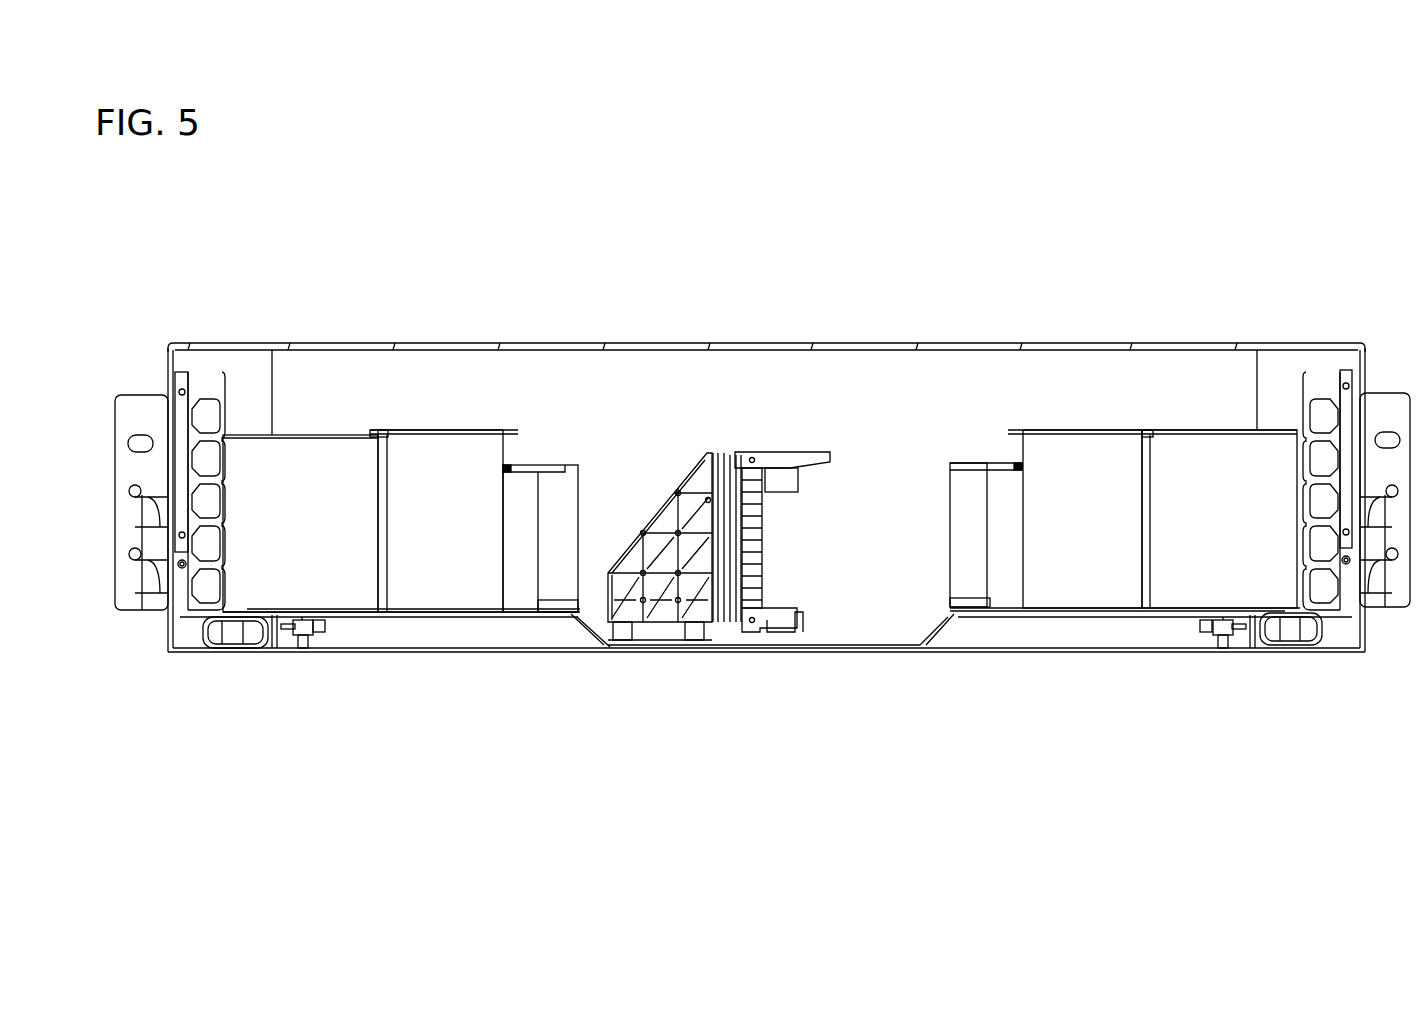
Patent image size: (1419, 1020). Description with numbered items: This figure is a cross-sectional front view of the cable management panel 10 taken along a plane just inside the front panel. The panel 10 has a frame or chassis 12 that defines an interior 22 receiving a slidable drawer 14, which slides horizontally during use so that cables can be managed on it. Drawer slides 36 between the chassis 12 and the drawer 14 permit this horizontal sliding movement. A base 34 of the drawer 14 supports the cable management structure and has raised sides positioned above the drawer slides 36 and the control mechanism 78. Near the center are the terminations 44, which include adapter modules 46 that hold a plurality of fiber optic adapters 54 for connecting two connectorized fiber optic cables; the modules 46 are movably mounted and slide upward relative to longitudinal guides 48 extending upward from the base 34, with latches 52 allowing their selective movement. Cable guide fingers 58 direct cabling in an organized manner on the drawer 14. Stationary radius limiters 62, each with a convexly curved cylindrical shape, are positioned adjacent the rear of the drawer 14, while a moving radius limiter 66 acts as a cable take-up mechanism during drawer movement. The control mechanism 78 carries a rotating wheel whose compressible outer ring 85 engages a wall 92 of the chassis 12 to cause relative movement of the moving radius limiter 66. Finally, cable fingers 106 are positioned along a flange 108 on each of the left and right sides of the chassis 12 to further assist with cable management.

The cable management panel 10 is at (837, 303).
The chassis 12 is at (1058, 343).
The drawer 14 is at (935, 633).
The interior 22 is at (878, 418).
The base 34 is at (856, 645).
The drawer slides 36 is at (222, 632).
The terminations 44 is at (676, 462).
The adapter modules 46 is at (762, 566).
The longitudinal guides 48 is at (665, 605).
The latches 52 is at (807, 452).
The fiber optic adapters 54 is at (800, 484).
The cable guide fingers 58 is at (566, 486).
The stationary radius limiter 62 is at (419, 528).
The moving radius limiter 66 is at (286, 527).
The control mechanism 78 is at (309, 645).
The compressible outer ring 85 is at (284, 623).
The wall 92 is at (273, 637).
The cable fingers 106 is at (212, 372).
The flange 108 is at (183, 373).